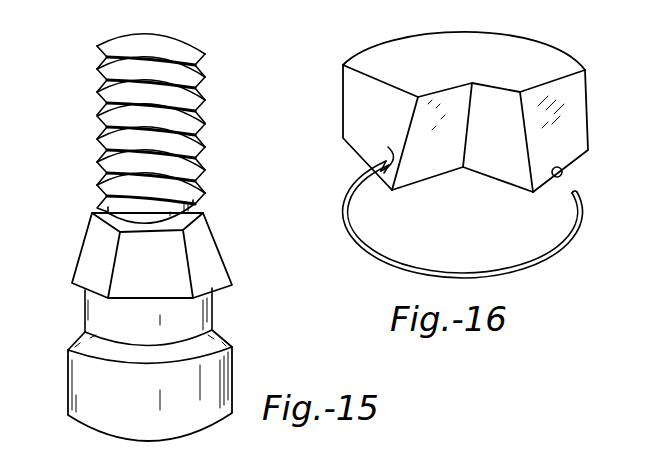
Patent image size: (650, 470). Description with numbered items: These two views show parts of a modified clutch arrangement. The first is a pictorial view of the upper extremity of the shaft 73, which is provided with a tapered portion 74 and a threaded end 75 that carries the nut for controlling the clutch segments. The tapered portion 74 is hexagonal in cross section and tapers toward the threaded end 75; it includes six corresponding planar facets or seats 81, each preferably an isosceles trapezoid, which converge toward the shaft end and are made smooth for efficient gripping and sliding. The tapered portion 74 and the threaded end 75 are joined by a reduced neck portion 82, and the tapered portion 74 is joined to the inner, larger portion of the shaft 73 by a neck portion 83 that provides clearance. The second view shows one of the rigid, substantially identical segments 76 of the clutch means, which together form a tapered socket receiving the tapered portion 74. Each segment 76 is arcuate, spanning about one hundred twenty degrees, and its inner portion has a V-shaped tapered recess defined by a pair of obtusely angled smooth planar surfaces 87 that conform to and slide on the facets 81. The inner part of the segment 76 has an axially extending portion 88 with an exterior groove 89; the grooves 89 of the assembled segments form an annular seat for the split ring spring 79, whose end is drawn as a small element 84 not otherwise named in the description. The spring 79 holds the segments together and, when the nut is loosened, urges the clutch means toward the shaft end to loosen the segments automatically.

In FIG. 15, the shaft 73 is at (66, 374).
In FIG. 15, the tapered portion 74 is at (135, 255).
In FIG. 15, the threaded end 75 is at (95, 116).
In FIG. 16, the segment 76 is at (465, 128).
In FIG. 16, the spring 79 is at (564, 172).
In FIG. 15, the facets 81 is at (64, 229).
In FIG. 15, the neck portion 82 is at (194, 211).
In FIG. 15, the neck portion 83 is at (97, 312).
In FIG. 16, the ball end 84 is at (550, 166).
In FIG. 16, the planar surfaces 87 is at (485, 98).
In FIG. 16, the axially extending portion 88 is at (379, 184).
In FIG. 16, the groove 89 is at (390, 157).